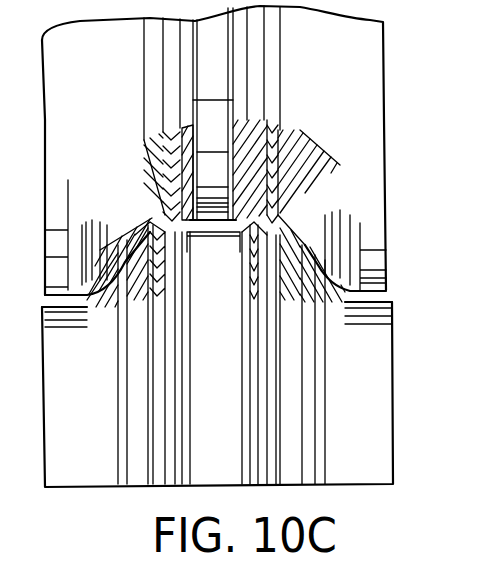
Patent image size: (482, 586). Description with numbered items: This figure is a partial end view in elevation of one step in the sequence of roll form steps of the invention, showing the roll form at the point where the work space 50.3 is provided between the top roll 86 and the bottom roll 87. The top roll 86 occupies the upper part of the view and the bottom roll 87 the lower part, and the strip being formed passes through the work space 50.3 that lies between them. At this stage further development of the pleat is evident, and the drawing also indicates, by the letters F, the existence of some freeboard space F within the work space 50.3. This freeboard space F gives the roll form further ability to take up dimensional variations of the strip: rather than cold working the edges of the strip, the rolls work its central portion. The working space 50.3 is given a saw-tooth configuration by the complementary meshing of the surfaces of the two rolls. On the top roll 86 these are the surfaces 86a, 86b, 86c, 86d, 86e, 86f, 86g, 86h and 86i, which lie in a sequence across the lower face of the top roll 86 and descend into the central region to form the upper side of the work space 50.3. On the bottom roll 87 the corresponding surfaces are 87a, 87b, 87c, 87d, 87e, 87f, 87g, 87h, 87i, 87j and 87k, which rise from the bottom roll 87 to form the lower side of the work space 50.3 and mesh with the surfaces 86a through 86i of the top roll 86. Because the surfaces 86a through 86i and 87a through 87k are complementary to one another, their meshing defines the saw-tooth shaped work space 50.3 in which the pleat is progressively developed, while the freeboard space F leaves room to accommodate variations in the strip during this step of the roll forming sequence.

The top roll 86 is at (93, 82).
The surface of top roll 86a is at (138, 227).
The surface of top roll 86b is at (155, 153).
The surface of top roll 86c is at (170, 114).
The surface of top roll 86d is at (185, 78).
The surface of top roll 86e is at (215, 118).
The surface of top roll 86f is at (245, 125).
The surface of top roll 86g is at (264, 152).
The surface of top roll 86h is at (273, 160).
The surface of top roll 86i is at (283, 210).
The freeboard space F is at (153, 195).
The work space 50.3 is at (218, 240).
The bottom roll 87 is at (53, 435).
The surface of bottom roll 87a is at (125, 342).
The surface of bottom roll 87b is at (140, 352).
The surface of bottom roll 87c is at (163, 367).
The surface of bottom roll 87d is at (170, 390).
The surface of bottom roll 87e is at (183, 417).
The surface of bottom roll 87f is at (217, 320).
The surface of bottom roll 87g is at (247, 303).
The surface of bottom roll 87h is at (260, 337).
The surface of bottom roll 87i is at (273, 373).
The surface of bottom roll 87j is at (290, 418).
The surface of bottom roll 87k is at (308, 450).